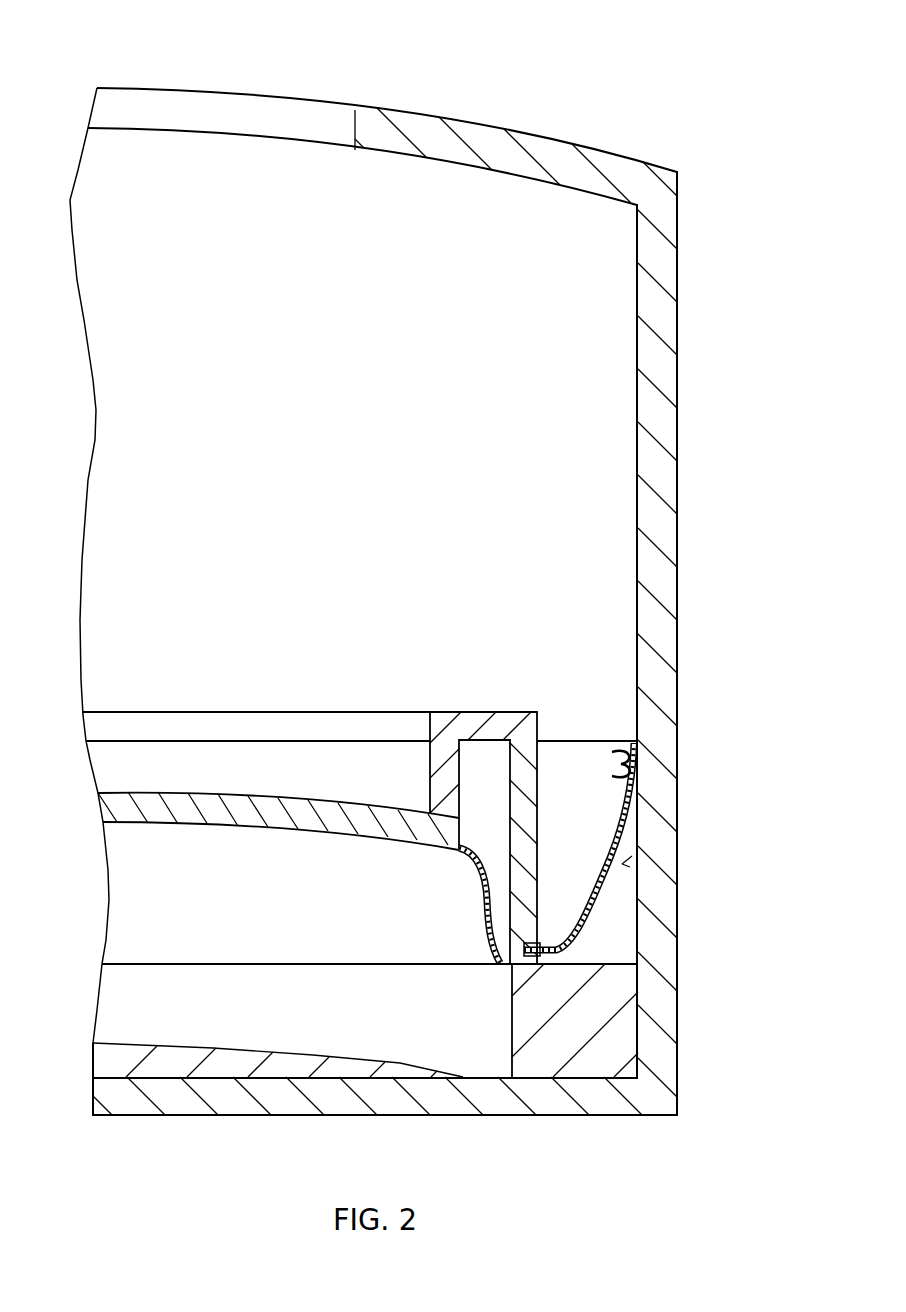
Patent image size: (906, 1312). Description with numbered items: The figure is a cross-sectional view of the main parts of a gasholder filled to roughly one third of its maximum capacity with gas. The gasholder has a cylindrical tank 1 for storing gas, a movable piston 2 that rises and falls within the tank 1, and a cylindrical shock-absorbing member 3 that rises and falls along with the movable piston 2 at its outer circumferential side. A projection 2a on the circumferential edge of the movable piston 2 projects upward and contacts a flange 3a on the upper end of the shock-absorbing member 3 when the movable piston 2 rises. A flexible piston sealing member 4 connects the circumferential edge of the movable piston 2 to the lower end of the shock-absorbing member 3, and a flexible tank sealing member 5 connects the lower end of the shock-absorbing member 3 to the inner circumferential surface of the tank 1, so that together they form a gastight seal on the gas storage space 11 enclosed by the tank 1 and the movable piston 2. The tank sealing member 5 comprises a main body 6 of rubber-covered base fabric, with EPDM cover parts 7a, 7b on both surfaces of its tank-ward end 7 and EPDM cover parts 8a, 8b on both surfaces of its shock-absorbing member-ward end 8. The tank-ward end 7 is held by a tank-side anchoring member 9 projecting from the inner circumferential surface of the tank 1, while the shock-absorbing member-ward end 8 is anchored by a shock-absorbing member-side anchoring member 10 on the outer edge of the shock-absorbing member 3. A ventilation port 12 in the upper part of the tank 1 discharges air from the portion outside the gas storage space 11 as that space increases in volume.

The tank 1 is at (672, 434).
The movable piston 2 is at (207, 802).
The projection 2a is at (435, 780).
The shock-absorbing member 3 is at (528, 773).
The flange 3a is at (452, 714).
The piston sealing member 4 is at (484, 884).
The tank sealing member 5 is at (623, 864).
The main body 6 is at (605, 882).
The tank-ward end 7 is at (639, 757).
The cover part 7a is at (640, 792).
The cover part 7b is at (618, 793).
The shock-absorbing member-ward end 8 is at (537, 956).
The cover part 8a is at (566, 958).
The cover part 8b is at (556, 943).
The tank-side anchoring member 9 is at (630, 738).
The shock-absorbing member-side anchoring member 10 is at (500, 957).
The gas storage space 11 is at (250, 921).
The ventilation port 12 is at (260, 106).